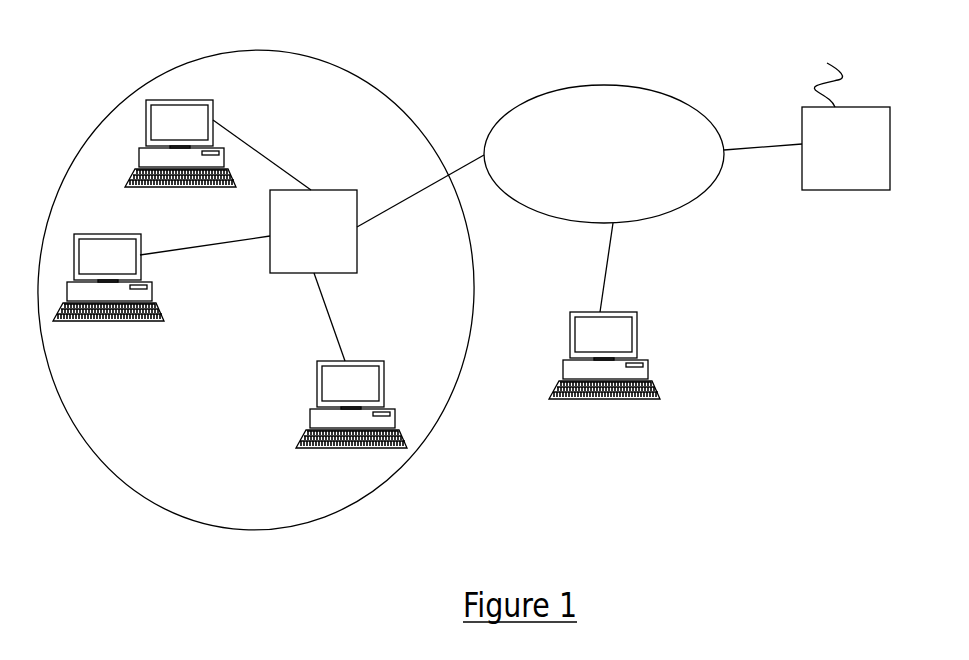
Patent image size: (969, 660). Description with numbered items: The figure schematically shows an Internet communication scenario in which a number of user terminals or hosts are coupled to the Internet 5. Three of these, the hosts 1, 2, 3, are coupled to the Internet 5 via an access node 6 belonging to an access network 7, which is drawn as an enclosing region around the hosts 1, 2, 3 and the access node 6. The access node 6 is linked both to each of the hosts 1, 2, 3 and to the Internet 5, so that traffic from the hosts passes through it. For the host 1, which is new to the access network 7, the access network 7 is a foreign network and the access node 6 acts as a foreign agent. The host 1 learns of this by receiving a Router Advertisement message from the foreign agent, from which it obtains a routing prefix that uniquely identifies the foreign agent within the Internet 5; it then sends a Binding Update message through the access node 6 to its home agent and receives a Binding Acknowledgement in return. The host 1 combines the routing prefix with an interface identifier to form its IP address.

The host 1 is at (318, 377).
The host 2 is at (113, 323).
The host 3 is at (213, 102).
The Internet 5 is at (570, 85).
The access node 6 is at (270, 258).
The access network 7 is at (129, 486).